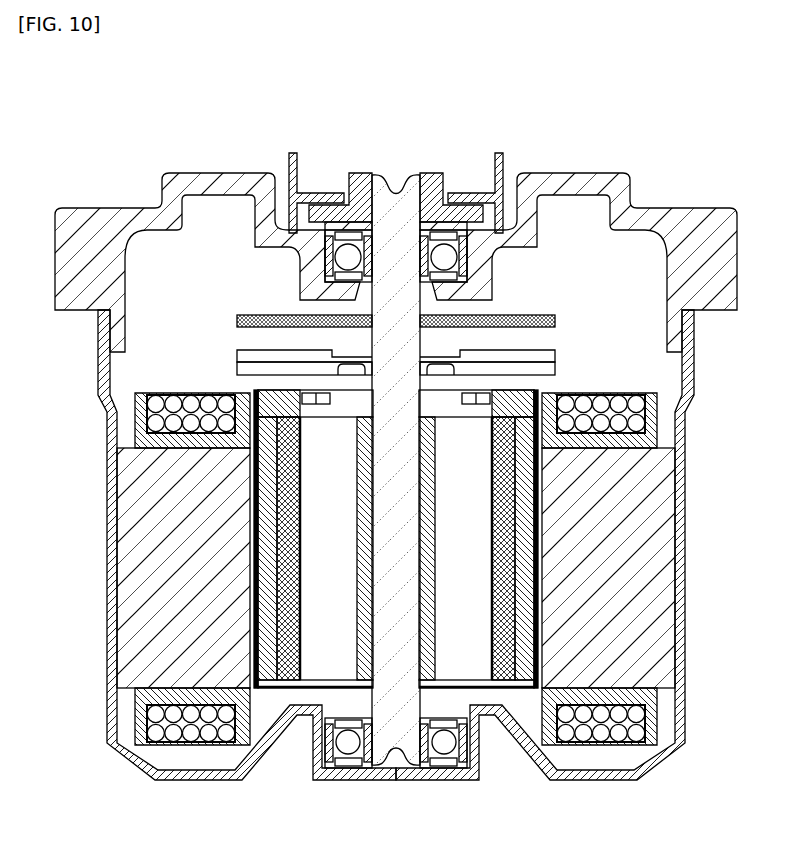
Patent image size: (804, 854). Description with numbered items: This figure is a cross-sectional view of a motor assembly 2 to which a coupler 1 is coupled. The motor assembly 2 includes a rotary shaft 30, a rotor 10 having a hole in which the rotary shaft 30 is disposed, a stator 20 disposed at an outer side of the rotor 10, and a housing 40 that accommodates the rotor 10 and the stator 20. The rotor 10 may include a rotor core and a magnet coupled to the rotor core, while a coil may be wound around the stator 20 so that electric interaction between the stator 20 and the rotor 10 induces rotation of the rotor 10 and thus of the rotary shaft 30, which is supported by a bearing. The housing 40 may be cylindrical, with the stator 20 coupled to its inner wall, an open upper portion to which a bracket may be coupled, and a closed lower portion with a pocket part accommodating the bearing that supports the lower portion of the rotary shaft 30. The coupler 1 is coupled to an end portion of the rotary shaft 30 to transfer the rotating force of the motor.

The coupler 1 is at (449, 150).
The motor assembly 2 is at (614, 155).
The rotor 10 is at (474, 483).
The stator 20 is at (624, 639).
The rotary shaft 30 is at (394, 583).
The housing 40 is at (694, 431).